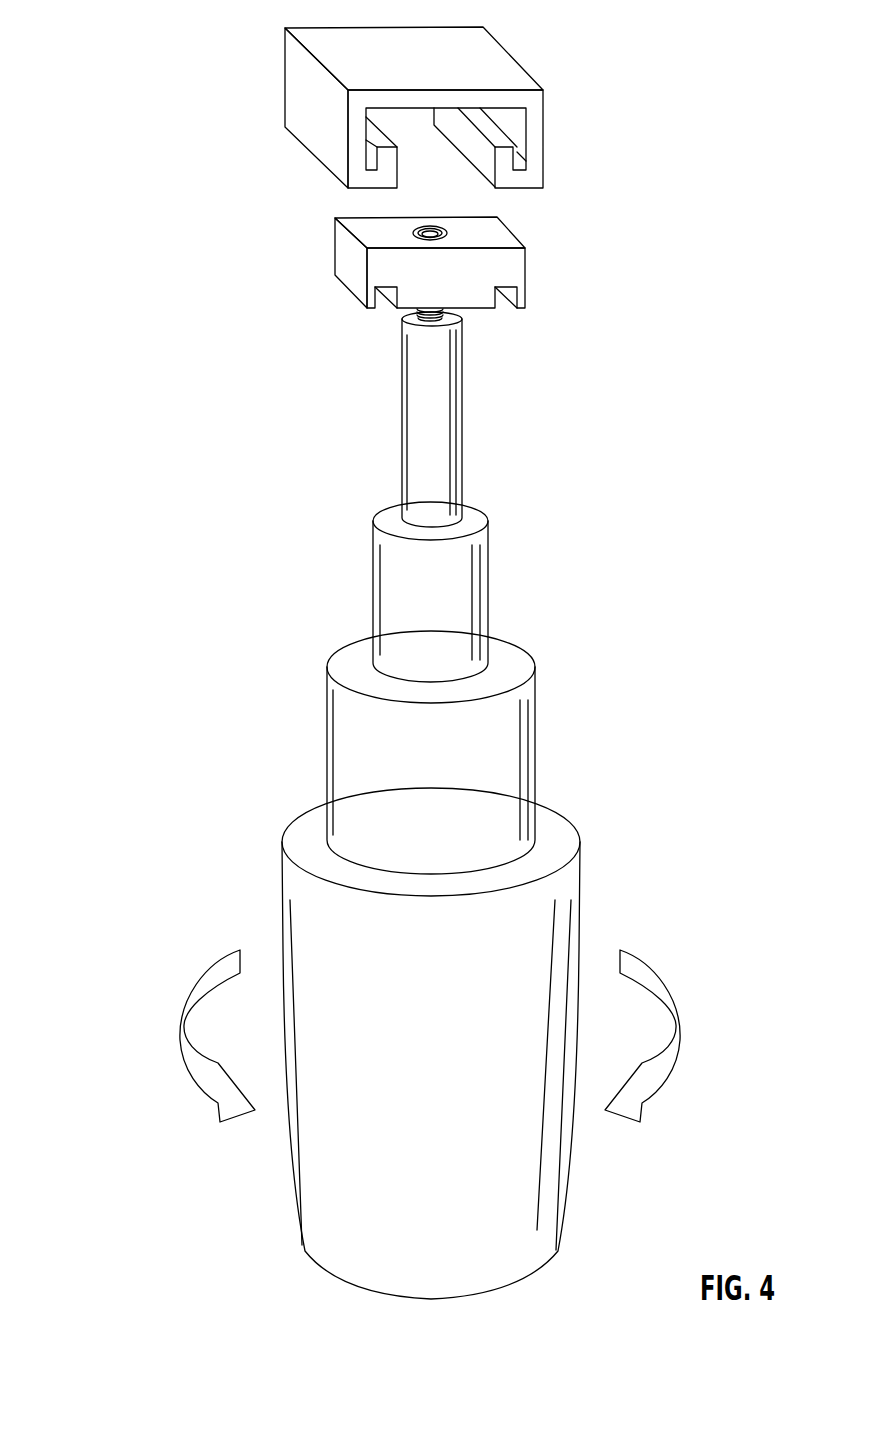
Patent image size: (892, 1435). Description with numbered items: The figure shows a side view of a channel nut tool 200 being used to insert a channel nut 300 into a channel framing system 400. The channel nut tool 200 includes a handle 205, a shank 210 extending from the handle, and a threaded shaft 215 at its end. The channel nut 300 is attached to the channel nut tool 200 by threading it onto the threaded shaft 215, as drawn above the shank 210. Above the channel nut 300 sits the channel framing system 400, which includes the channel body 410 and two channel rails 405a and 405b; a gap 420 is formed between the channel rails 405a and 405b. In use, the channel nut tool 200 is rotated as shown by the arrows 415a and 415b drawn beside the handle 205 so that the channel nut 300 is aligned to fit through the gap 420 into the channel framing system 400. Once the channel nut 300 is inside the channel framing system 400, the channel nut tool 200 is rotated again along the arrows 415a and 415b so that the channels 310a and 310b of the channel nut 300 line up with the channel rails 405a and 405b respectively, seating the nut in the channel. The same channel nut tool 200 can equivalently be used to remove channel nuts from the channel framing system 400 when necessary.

The channel nut tool 200 is at (331, 819).
The handle 205 is at (293, 1012).
The shank 210 is at (166, 693).
The threaded shaft 215 is at (394, 320).
The channel nut 300 is at (420, 273).
The channel 310a is at (368, 295).
The channel 310b is at (523, 297).
The channel framing system 400 is at (441, 117).
The channel rail 405a is at (364, 153).
The channel rail 405b is at (527, 154).
The channel body 410 is at (337, 42).
The arrow 415a is at (667, 983).
The arrow 415b is at (193, 984).
The gap 420 is at (468, 191).